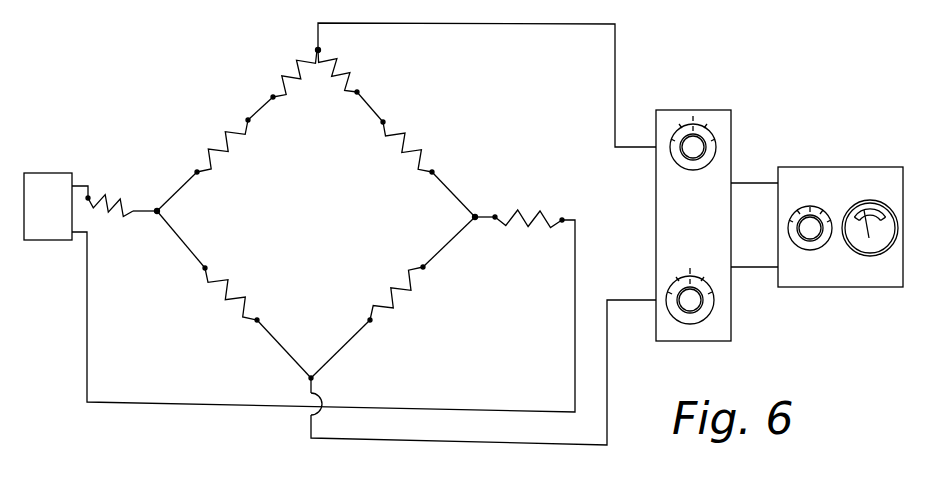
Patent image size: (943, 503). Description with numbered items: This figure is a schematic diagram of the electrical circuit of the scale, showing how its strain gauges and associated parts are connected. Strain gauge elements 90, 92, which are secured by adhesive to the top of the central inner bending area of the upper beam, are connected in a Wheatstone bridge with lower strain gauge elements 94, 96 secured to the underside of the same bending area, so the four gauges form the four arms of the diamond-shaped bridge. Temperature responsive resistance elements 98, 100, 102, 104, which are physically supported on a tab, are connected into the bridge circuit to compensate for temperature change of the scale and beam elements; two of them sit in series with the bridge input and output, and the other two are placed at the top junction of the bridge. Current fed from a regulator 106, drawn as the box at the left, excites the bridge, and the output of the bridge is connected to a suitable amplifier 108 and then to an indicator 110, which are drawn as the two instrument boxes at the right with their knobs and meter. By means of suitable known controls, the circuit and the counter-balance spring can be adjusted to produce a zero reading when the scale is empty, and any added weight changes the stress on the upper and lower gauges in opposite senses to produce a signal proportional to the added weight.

The strain gauge element 90 is at (221, 155).
The strain gauge element 92 is at (410, 165).
The lower strain gauge element 94 is at (388, 284).
The lower strain gauge element 96 is at (232, 282).
The temperature responsive resistance element 98 is at (118, 214).
The temperature responsive resistance element 100 is at (530, 196).
The temperature responsive resistance element 102 is at (278, 85).
The temperature responsive resistance element 104 is at (343, 73).
The regulator 106 is at (48, 183).
The amplifier 108 is at (715, 115).
The indicator 110 is at (838, 177).